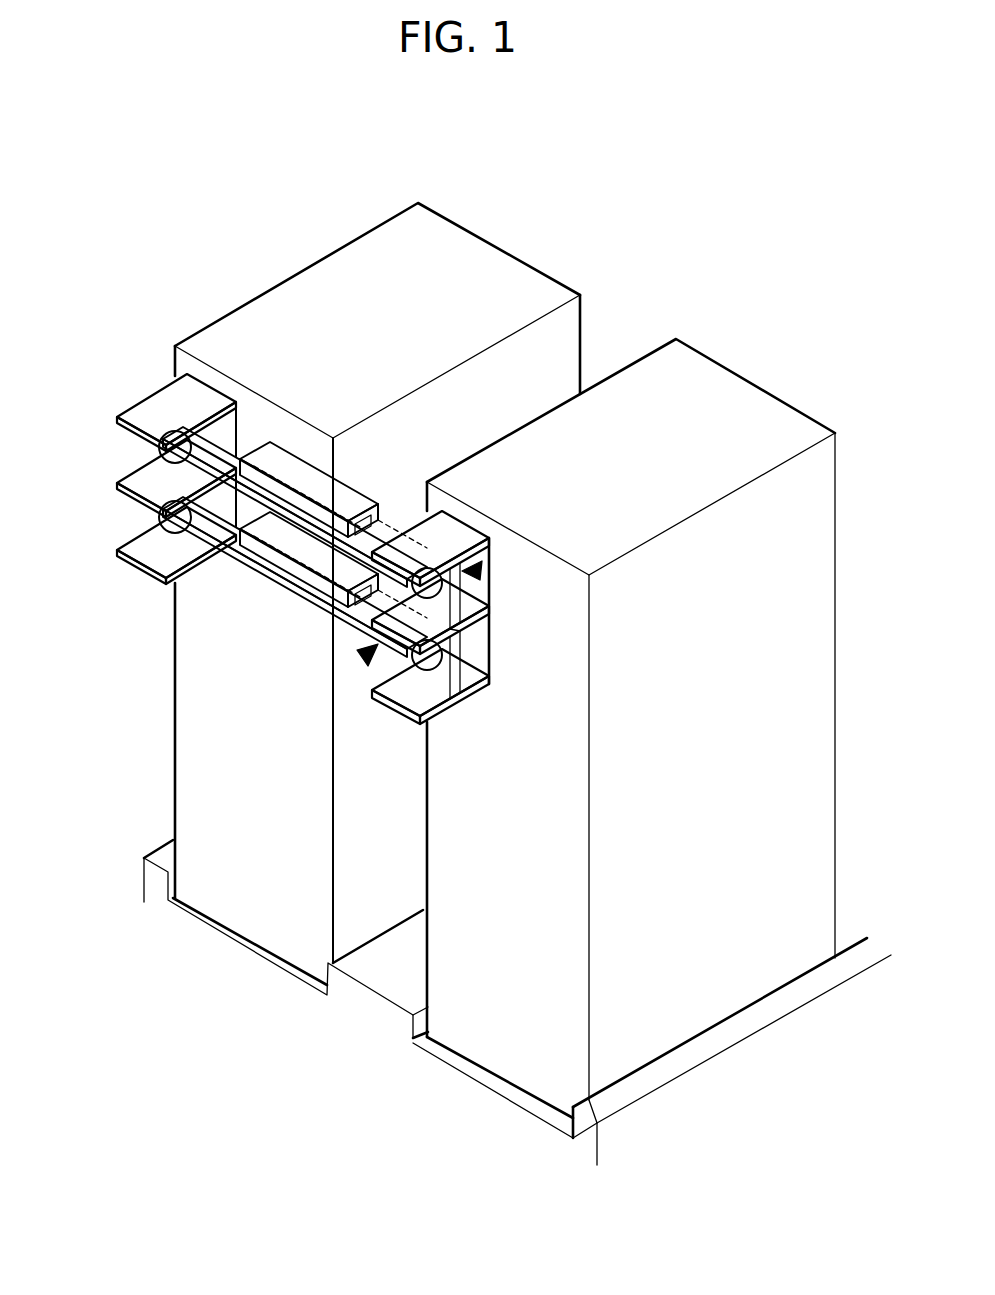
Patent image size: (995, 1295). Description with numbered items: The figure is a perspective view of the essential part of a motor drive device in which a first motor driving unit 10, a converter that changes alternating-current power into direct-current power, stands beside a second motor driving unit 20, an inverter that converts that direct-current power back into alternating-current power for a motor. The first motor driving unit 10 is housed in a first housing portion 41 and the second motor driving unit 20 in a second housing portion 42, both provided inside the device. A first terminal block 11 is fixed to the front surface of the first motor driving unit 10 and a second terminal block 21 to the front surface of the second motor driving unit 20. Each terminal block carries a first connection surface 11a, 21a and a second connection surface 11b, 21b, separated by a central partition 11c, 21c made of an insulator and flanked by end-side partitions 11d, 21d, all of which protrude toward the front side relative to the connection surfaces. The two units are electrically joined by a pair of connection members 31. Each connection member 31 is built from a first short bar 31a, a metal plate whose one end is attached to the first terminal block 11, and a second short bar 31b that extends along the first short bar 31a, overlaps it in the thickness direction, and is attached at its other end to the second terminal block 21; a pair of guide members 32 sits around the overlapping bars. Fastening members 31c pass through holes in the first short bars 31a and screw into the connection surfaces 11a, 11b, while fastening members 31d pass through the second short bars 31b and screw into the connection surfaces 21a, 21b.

The first motor driving unit 10 is at (480, 234).
The second motor driving unit 20 is at (750, 377).
The first terminal block 11 is at (136, 461).
The first connection surface 11a is at (225, 425).
The second connection surface 11b is at (212, 498).
The central partition 11c is at (120, 484).
The end-side partition 11d is at (150, 393).
The second terminal block 21 is at (465, 600).
The first connection surface 21a is at (463, 592).
The second connection surface 21b is at (490, 690).
The central partition 21c is at (465, 655).
The end-side partition 21d is at (435, 512).
The connection member 31 is at (320, 563).
The first short bar 31a is at (243, 447).
The second short bar 31b is at (395, 530).
The fastening member 31c is at (159, 449).
The fastening member 31d is at (445, 592).
The guide member 32 is at (302, 457).
The first housing portion 41 is at (232, 944).
The second housing portion 42 is at (500, 1086).